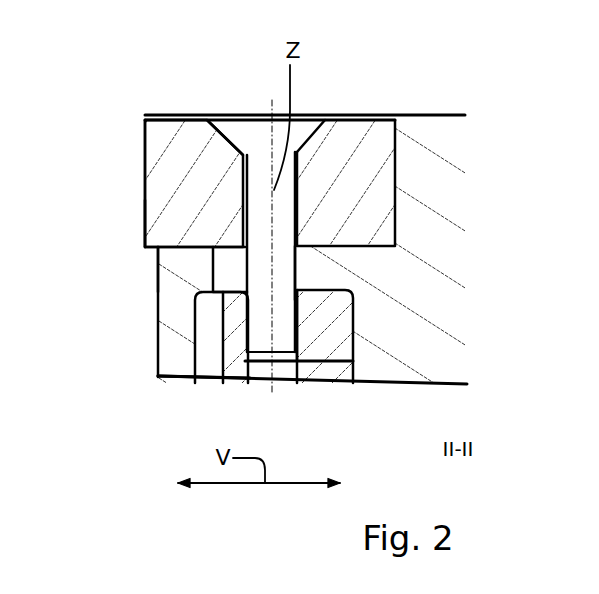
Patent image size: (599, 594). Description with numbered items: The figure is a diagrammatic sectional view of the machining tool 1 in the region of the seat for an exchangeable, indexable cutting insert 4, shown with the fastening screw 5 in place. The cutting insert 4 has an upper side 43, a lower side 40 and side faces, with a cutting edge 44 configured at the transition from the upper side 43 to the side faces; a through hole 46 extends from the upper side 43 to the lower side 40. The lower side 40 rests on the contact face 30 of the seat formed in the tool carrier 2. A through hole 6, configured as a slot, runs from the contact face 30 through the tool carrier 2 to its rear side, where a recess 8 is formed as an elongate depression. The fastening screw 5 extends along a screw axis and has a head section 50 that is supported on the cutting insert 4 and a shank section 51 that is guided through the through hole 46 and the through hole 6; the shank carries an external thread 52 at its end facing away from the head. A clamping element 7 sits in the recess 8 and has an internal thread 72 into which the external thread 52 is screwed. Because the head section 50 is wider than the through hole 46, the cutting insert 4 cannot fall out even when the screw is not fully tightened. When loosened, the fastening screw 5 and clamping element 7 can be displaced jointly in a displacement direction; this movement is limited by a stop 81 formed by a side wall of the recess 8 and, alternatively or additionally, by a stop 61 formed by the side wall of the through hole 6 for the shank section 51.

The fastening arrangement 1 is at (493, 63).
The tool carrier 2 is at (440, 147).
The cutting insert 4 is at (185, 222).
The fastening screw 5 is at (255, 207).
The through hole 6 is at (195, 293).
The clamping element 7 is at (320, 340).
The recess 8 is at (218, 366).
The contact face 30 is at (326, 240).
The lower side 40 is at (168, 258).
The upper side 43 is at (160, 114).
The cutting edge 44 is at (147, 120).
The through hole 46 is at (250, 187).
The head section 50 is at (240, 133).
The shank section 51 is at (300, 268).
The external thread 52 is at (306, 322).
The stop 61 is at (226, 262).
The internal thread 72 is at (286, 345).
The stop 81 is at (196, 348).